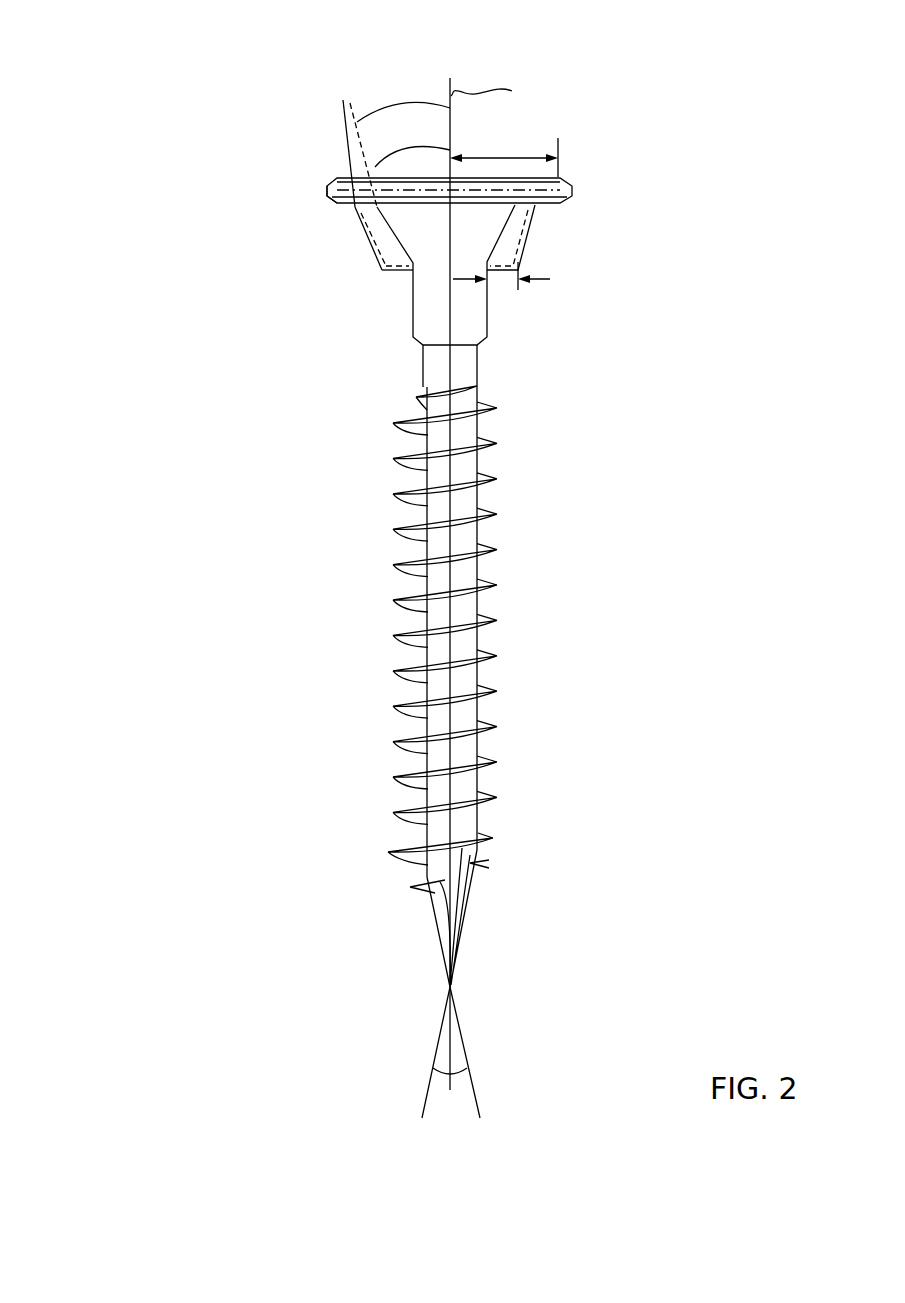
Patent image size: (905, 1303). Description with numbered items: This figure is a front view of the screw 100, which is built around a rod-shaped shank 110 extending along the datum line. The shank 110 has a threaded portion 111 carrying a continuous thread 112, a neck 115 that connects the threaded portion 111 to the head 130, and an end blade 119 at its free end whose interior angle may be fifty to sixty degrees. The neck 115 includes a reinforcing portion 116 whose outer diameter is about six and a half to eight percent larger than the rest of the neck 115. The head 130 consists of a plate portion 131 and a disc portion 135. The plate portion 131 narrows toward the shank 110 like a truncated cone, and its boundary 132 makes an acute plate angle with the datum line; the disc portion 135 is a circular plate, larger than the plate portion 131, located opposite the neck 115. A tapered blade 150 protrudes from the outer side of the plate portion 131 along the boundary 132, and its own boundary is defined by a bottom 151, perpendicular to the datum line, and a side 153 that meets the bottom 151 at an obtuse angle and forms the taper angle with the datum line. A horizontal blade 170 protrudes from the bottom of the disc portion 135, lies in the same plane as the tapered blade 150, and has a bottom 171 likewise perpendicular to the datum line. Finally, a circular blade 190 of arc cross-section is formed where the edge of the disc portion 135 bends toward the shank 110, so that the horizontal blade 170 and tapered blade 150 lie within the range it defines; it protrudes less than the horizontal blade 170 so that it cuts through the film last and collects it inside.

The screw 100 is at (195, 85).
The shank 110 is at (545, 638).
The threaded portion 111 is at (366, 384).
The thread 112 is at (487, 800).
The neck 115 is at (472, 367).
The reinforcing portion 116 is at (472, 330).
The end blade 119 is at (450, 927).
The head 130 is at (620, 168).
The plate portion 131 is at (480, 250).
The boundary of the plate portion 132 is at (507, 220).
The disc portion 135 is at (355, 172).
The tapered blade 150 is at (387, 230).
The bottom of the tapered blade 151 is at (400, 272).
The side of the tapered blade 153 is at (380, 262).
The horizontal blade 170 is at (352, 213).
The bottom of the horizontal blade 171 is at (367, 211).
The circular blade 190 is at (337, 204).